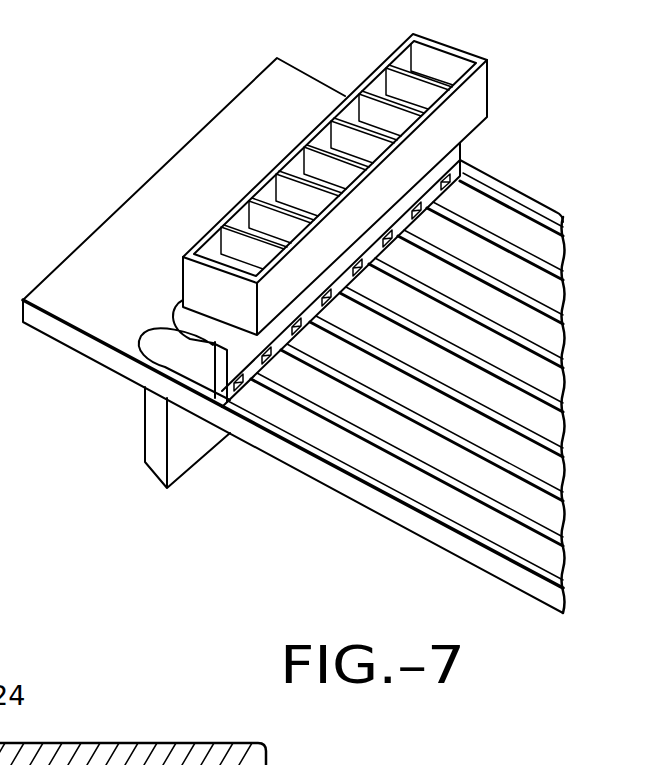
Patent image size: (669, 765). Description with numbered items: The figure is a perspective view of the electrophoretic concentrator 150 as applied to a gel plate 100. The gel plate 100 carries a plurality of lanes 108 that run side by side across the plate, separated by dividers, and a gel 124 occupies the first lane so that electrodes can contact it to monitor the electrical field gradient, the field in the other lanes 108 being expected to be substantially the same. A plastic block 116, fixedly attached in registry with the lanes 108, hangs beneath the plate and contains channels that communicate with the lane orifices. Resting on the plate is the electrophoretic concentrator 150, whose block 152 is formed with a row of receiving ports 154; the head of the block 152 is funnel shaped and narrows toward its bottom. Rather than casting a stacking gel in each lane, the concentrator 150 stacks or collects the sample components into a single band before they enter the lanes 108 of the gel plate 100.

The gel plate 100 is at (148, 225).
The lanes 108 is at (523, 277).
The plastic block 116 is at (185, 432).
The gel 124 is at (487, 527).
The electrophoretic concentrator 150 is at (223, 307).
The block 152 is at (472, 98).
The receiving ports 154 is at (413, 83).